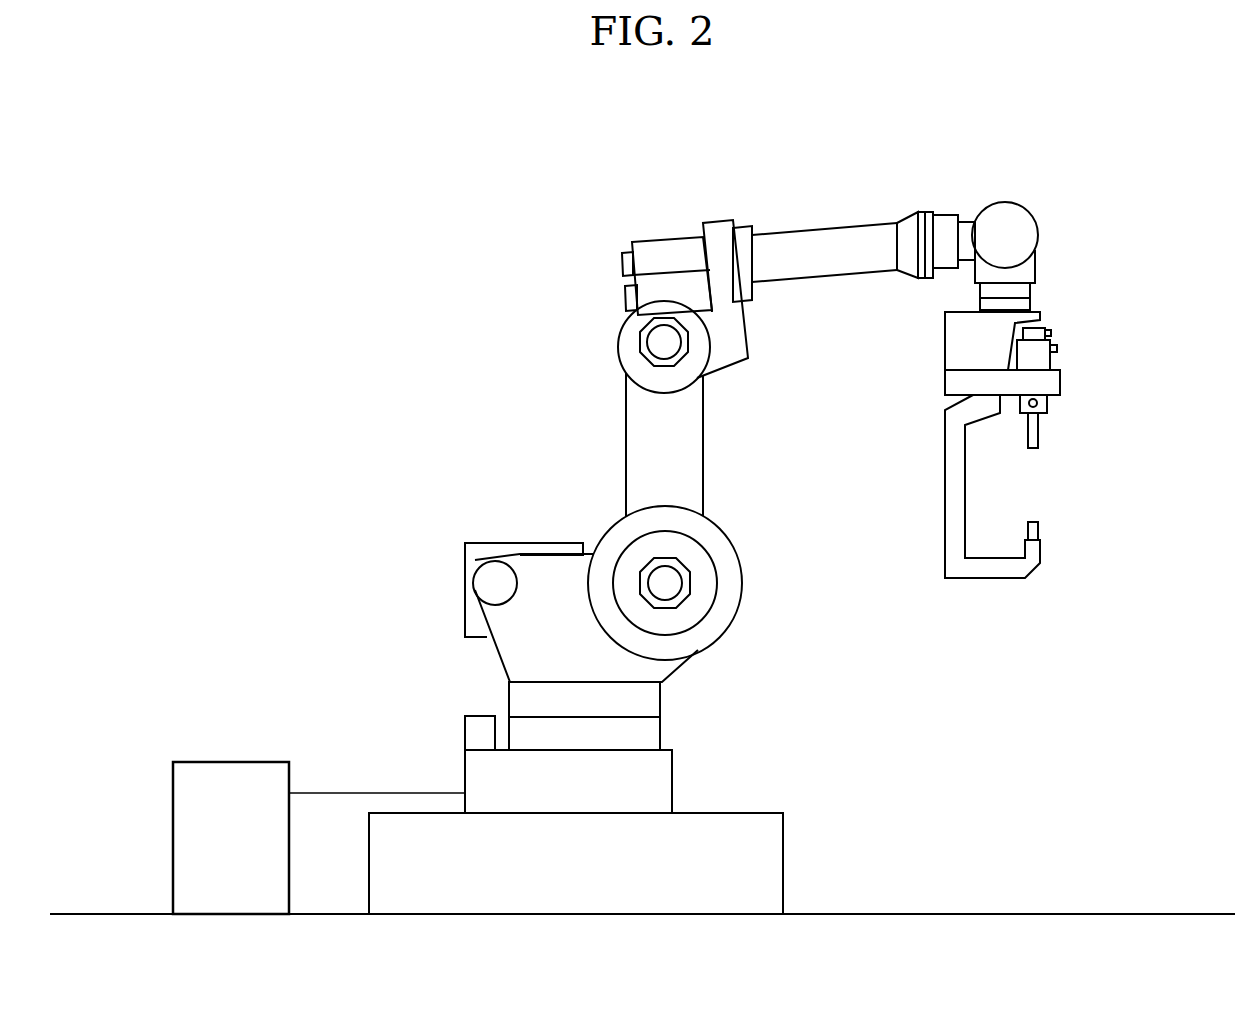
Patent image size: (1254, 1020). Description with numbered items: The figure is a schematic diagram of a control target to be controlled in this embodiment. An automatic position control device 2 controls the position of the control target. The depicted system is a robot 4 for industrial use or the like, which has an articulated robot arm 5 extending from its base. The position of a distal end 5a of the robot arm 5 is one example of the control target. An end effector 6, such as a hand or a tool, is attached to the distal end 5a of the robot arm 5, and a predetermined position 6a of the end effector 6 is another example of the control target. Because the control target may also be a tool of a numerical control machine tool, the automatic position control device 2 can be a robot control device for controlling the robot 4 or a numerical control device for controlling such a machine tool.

The automatic position control device 2 is at (227, 760).
The robot 4 is at (752, 514).
The robot arm 5 is at (827, 228).
The distal end 5a is at (1031, 288).
The end effector 6 is at (932, 381).
The predetermined position 6a is at (1033, 522).